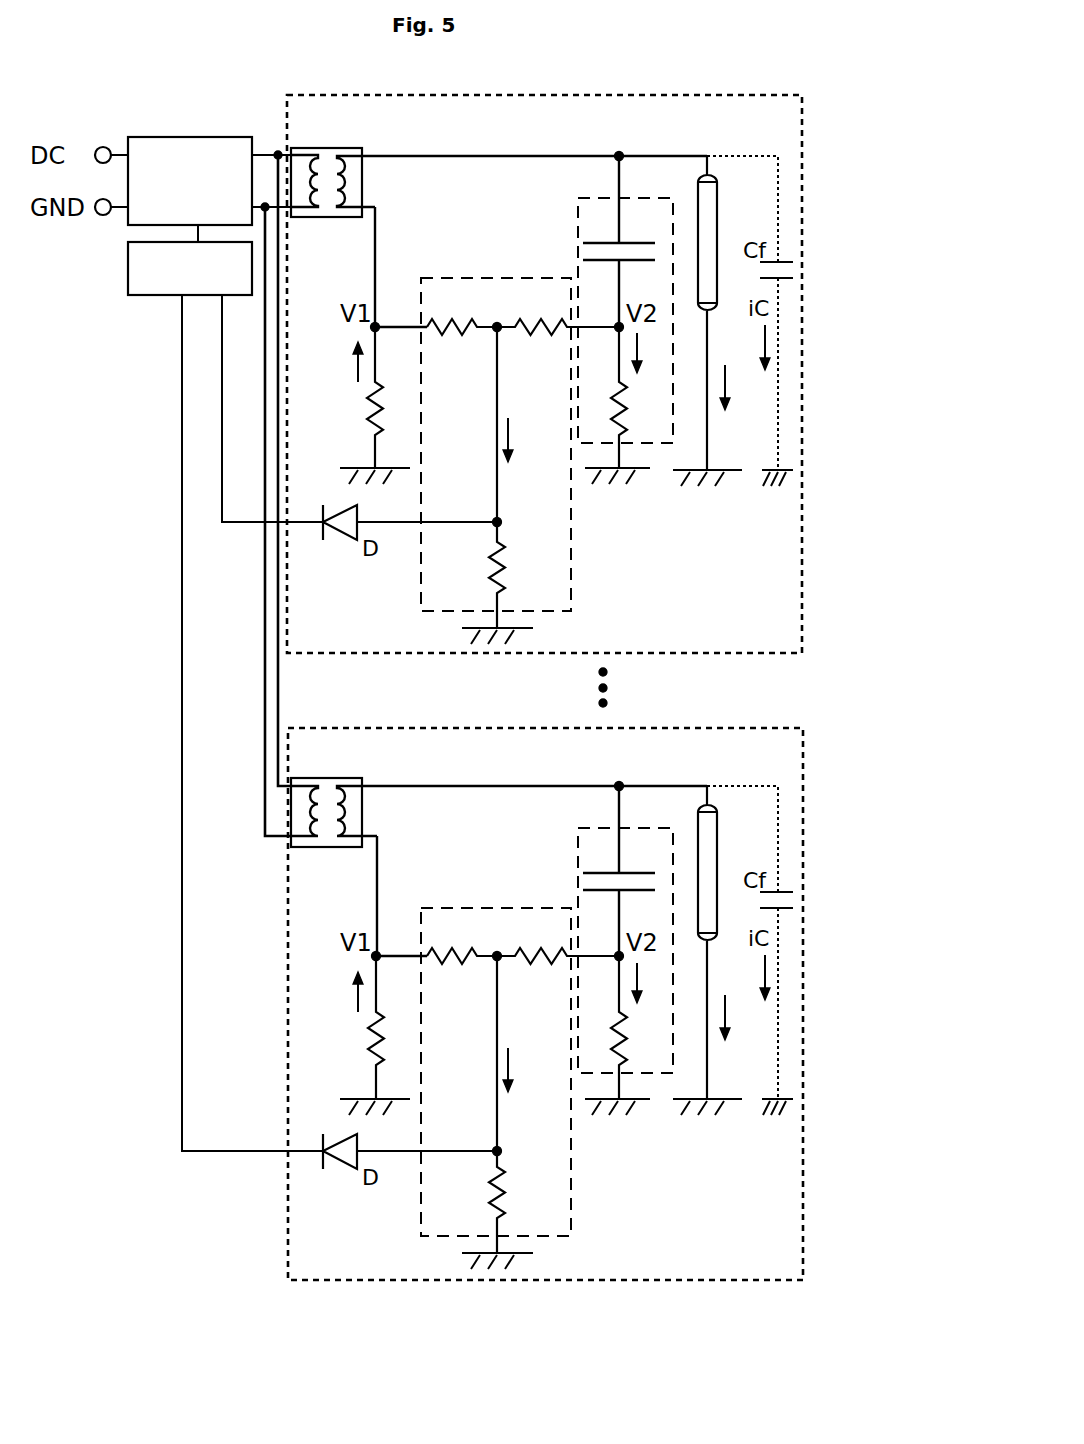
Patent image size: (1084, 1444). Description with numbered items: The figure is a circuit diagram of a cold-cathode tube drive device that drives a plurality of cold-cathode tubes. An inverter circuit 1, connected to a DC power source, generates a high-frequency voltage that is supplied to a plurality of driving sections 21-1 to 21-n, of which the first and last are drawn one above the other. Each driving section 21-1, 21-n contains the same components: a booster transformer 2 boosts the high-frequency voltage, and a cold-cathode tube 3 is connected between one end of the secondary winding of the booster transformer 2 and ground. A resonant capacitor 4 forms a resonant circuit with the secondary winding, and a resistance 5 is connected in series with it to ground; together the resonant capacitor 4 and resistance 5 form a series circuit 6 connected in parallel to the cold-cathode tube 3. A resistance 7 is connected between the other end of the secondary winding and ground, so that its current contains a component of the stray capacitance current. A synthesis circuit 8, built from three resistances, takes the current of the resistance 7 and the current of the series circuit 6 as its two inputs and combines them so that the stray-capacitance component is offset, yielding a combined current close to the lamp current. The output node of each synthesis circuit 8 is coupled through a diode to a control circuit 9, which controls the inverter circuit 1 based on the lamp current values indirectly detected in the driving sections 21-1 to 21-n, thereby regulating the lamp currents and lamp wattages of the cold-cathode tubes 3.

The inverter circuit 1 is at (214, 138).
The booster transformer 2 is at (336, 149).
The cold-cathode tube 3 is at (714, 226).
The resonant capacitor 4 is at (636, 244).
The resistance 5 is at (635, 418).
The series circuit 6 is at (636, 201).
The resistance 7 is at (360, 413).
The synthesis circuit 8 is at (502, 280).
The control circuit 9 is at (160, 296).
The driving section 21-1 is at (642, 96).
The driving section 21-n is at (644, 729).